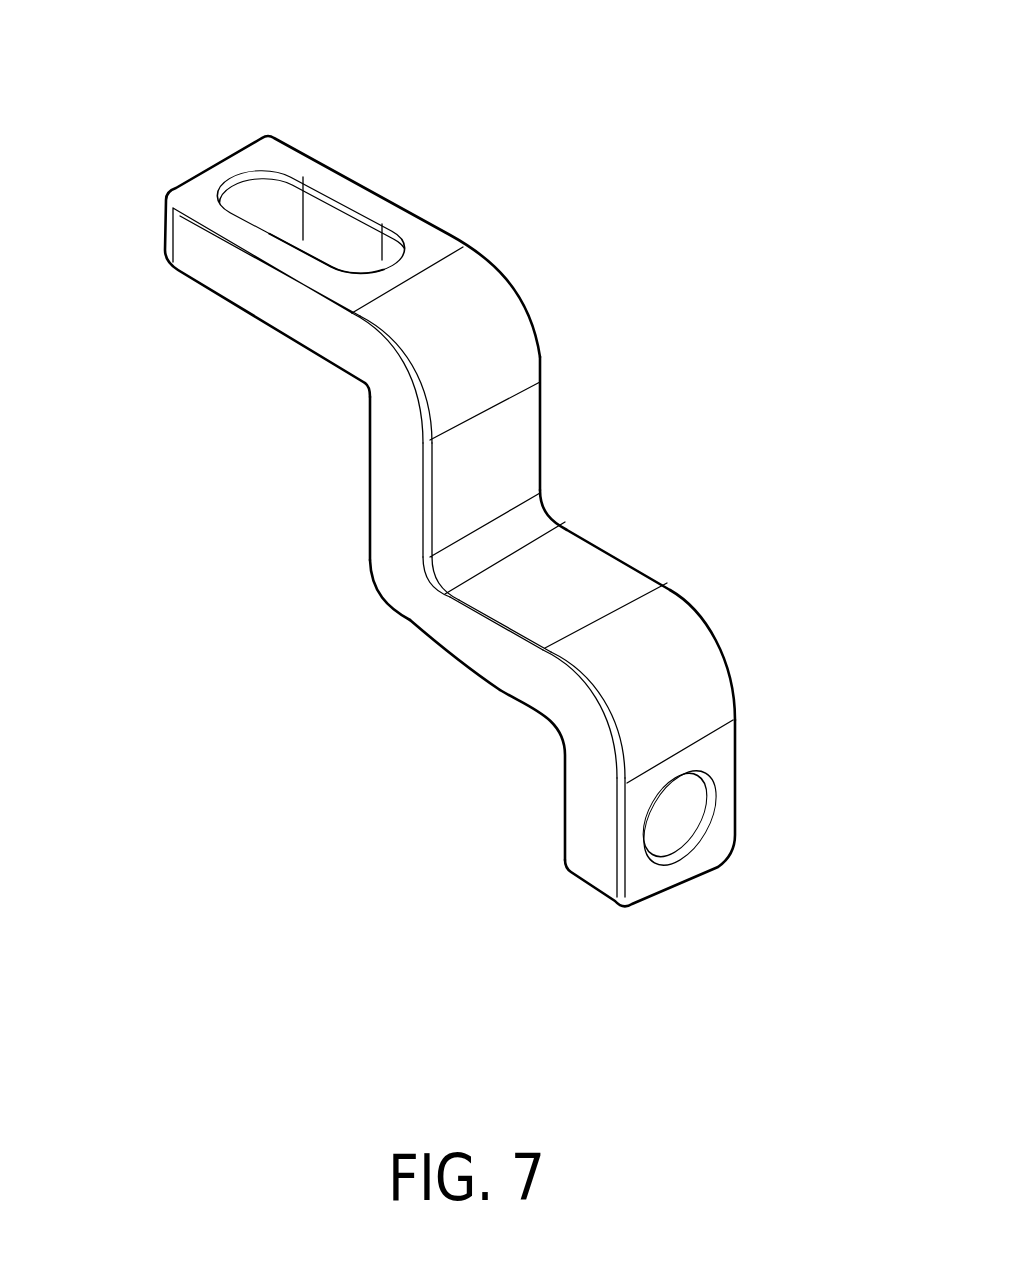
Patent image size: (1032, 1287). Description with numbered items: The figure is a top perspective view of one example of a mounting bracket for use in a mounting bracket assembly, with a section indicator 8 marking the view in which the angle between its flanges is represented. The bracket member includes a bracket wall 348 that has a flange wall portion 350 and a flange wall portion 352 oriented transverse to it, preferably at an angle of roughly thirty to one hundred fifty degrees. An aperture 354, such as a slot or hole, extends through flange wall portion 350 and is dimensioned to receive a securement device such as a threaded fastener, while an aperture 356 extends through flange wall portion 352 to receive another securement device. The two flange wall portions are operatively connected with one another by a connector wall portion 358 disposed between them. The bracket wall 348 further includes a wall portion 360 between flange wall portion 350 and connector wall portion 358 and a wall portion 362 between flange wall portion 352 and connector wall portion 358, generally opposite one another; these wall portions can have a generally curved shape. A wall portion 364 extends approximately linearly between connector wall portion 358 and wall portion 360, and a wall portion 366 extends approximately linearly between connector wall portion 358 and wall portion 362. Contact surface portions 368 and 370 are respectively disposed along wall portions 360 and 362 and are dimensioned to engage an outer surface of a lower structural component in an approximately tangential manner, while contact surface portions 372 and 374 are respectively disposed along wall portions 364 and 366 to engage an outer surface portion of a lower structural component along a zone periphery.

The bracket wall 348 is at (364, 565).
The flange wall portion 350 is at (593, 835).
The flange wall portion 352 is at (220, 283).
The aperture 354 is at (697, 816).
The aperture 356 is at (315, 205).
The connector wall portion 358 is at (407, 590).
The wall portion 360 is at (578, 728).
The wall portion 362 is at (383, 387).
The wall portion 364 is at (490, 655).
The wall portion 366 is at (390, 488).
The contact surface portion 368 is at (695, 675).
The contact surface portion 370 is at (487, 298).
The contact surface portion 372 is at (585, 577).
The contact surface portion 374 is at (515, 442).
The FIG. 8 section line 8 is at (183, 148).